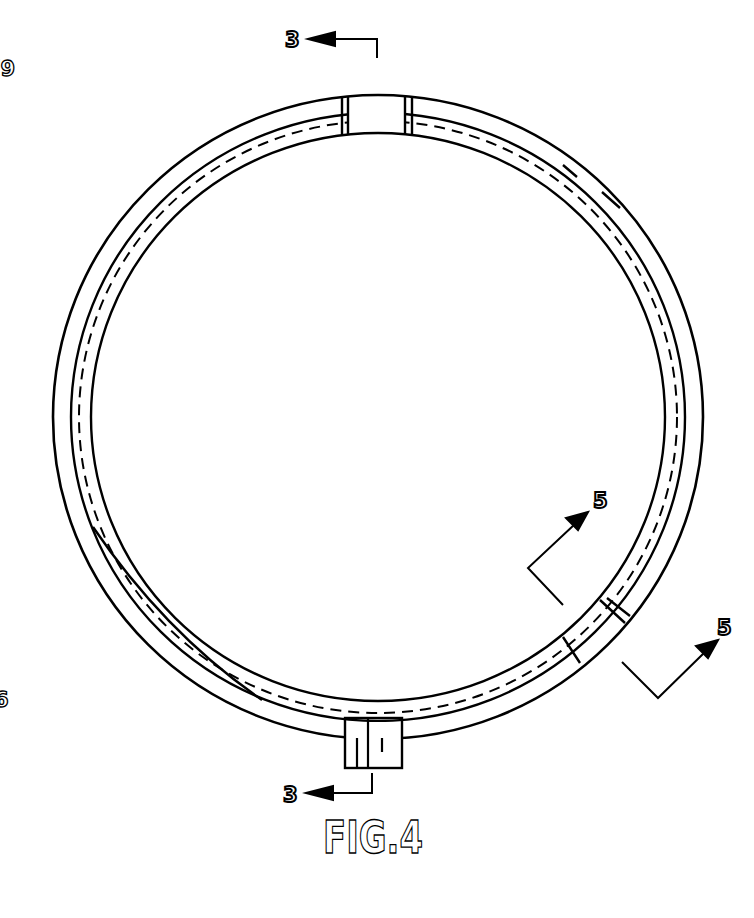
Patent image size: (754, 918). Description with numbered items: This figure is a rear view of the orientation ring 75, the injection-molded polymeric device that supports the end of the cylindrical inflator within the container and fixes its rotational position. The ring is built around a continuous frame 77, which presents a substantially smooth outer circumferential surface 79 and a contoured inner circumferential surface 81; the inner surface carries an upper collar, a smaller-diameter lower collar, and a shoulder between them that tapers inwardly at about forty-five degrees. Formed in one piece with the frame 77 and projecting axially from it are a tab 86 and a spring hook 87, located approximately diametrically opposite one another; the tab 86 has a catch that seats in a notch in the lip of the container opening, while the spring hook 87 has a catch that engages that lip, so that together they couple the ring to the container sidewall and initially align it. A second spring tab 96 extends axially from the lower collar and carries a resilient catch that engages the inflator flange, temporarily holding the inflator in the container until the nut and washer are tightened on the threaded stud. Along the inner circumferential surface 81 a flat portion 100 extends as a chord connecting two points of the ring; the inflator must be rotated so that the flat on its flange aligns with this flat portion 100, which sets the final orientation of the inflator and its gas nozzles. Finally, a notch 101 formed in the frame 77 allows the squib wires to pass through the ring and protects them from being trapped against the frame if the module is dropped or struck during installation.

The orientation ring 75 is at (183, 142).
The frame 77 is at (150, 647).
The outer circumferential surface 79 is at (52, 448).
The inner circumferential surface 81 is at (103, 332).
The tab 86 is at (395, 762).
The spring hook 87 is at (368, 124).
The second spring tab 96 is at (593, 645).
The flat portion 100 is at (157, 600).
The notch 101 is at (603, 190).